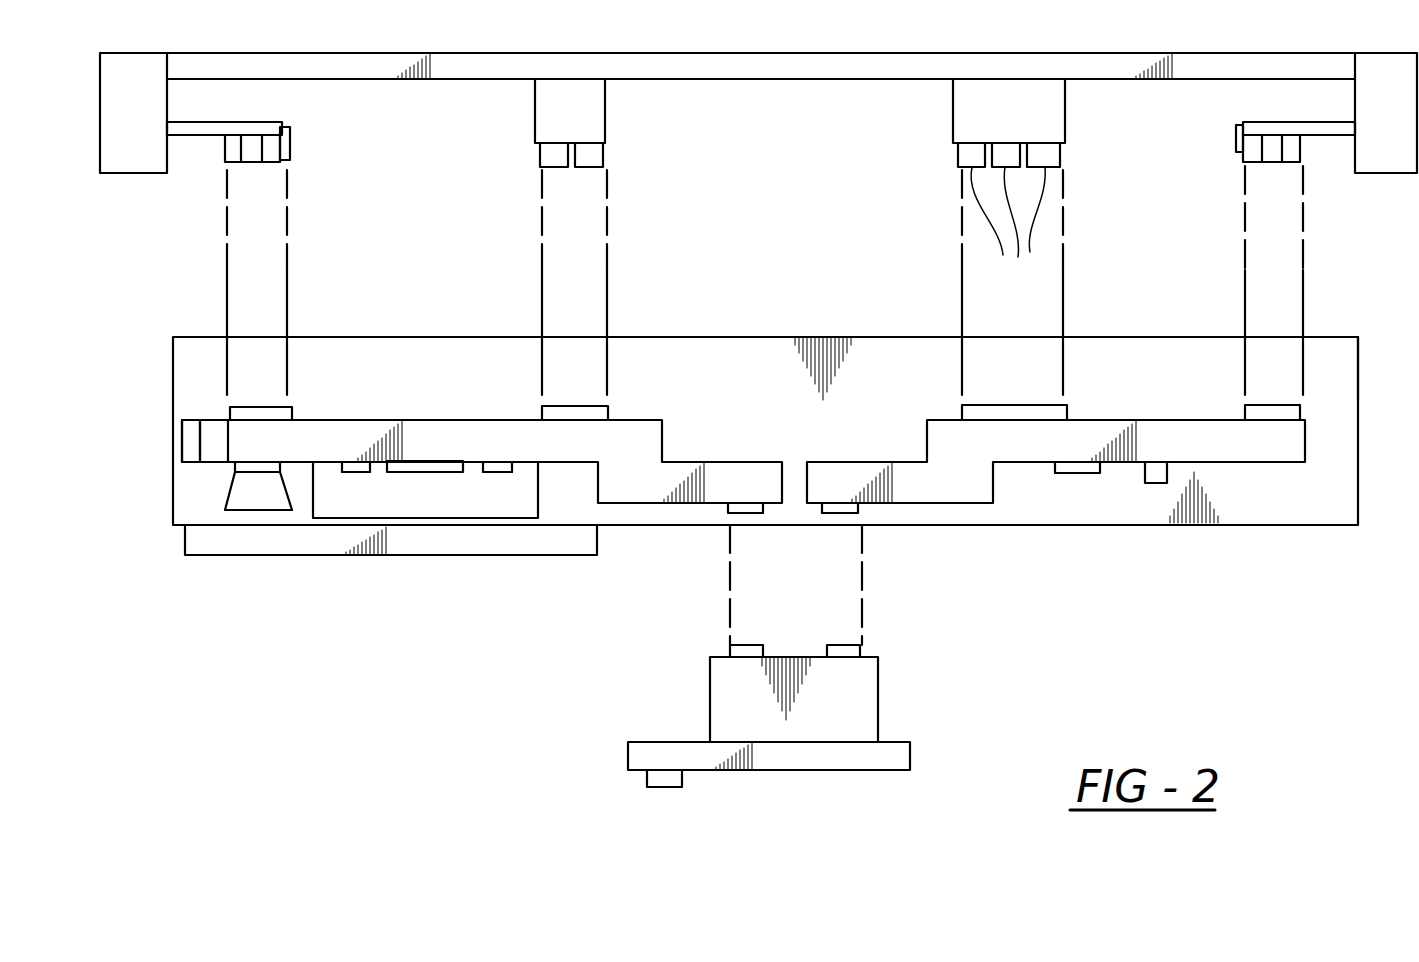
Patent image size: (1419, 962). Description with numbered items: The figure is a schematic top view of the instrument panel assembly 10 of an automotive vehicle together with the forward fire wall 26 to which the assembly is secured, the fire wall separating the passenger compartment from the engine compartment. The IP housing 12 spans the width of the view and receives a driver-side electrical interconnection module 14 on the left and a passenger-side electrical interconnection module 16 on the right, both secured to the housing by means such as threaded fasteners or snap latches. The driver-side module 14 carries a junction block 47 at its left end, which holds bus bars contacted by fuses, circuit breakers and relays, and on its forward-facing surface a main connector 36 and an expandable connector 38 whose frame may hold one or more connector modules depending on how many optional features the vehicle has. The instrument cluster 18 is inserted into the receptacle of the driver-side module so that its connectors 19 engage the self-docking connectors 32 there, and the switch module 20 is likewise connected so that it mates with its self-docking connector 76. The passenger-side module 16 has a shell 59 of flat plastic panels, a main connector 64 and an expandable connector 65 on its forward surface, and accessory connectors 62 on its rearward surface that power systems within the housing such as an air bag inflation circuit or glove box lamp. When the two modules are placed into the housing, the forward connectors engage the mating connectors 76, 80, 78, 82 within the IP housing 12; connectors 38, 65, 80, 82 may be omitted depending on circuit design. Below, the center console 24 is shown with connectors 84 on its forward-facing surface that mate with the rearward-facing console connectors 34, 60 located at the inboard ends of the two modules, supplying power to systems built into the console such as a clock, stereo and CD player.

The instrument panel assembly 10 is at (1374, 342).
The IP housing 12 is at (193, 350).
The driver-side electrical interconnection module 14 is at (563, 480).
The passenger-side electrical interconnection module 16 is at (1277, 498).
The instrument cluster 18 is at (323, 502).
The connectors 19 is at (350, 472).
The switch module 20 is at (245, 500).
The center console 24 is at (880, 713).
The forward fire wall 26 is at (828, 82).
The multi-terminal connectors 32 is at (355, 472).
The console connector 34 is at (752, 513).
The main connector 36 is at (265, 407).
The expandable connector 38 is at (560, 406).
The junction block 47 is at (172, 430).
The shell 59 is at (1227, 452).
The console connector 60 is at (832, 513).
The accessory connectors 62 is at (1082, 473).
The main connector 64 is at (1280, 405).
The expandable connector 65 is at (985, 405).
The self-docking connector 76 is at (290, 148).
The mating connector 78 is at (1247, 156).
The mating connector 80 is at (552, 160).
The mating connector 82 is at (1009, 187).
The connectors 84 is at (747, 647).